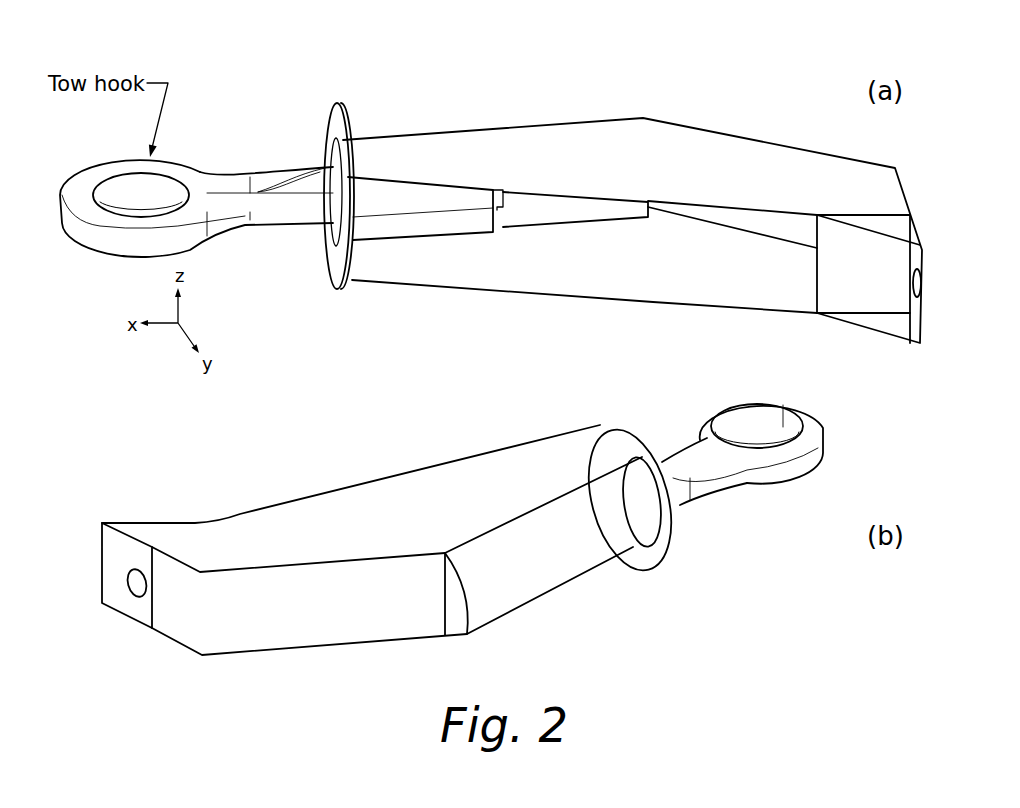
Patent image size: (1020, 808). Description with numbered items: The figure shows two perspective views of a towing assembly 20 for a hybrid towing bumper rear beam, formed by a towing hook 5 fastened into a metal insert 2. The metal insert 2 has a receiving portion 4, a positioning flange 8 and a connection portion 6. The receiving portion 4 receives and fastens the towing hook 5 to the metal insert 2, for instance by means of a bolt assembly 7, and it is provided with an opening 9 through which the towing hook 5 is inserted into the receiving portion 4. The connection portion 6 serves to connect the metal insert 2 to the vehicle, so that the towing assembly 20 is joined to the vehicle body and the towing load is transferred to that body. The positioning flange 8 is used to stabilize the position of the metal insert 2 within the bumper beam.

The metal insert 2 is at (573, 170).
The receiving portion 4 is at (427, 200).
The towing hook 5 is at (200, 185).
The connection portion 6 is at (922, 306).
The bolt assembly 7 is at (411, 222).
The positioning flange 8 is at (653, 557).
The opening 9 is at (330, 123).
The towing assembly 20 is at (738, 100).